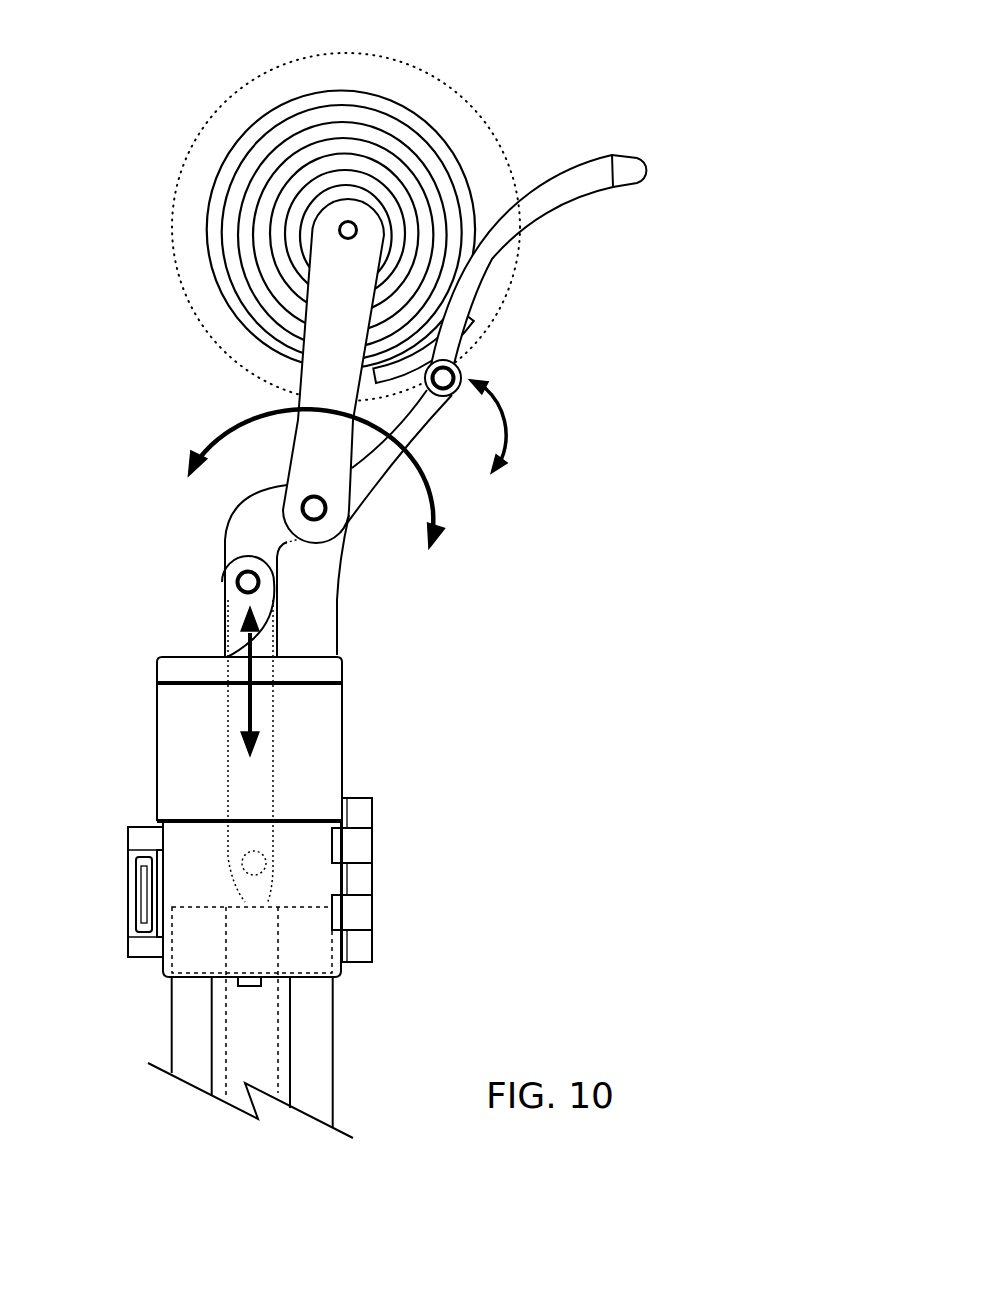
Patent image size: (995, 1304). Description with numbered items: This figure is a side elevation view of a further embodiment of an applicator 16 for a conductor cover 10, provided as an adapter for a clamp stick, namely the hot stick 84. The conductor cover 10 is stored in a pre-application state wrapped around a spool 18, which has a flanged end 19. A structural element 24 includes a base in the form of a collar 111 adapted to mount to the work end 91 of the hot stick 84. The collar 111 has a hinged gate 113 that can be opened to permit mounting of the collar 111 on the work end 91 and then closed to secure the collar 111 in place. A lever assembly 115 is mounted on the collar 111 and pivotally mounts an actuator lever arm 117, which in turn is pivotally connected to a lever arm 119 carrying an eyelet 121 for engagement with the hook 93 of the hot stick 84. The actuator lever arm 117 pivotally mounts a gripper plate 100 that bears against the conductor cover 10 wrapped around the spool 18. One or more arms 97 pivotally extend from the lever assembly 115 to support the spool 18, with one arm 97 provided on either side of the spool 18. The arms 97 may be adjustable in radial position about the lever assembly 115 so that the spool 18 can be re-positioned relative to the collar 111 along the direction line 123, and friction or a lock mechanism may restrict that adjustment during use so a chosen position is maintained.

The conductor cover 10 is at (400, 102).
The applicator 16 is at (542, 95).
The spool 18 is at (149, 217).
The flanged end 19 is at (503, 145).
The structural element 24 is at (320, 633).
The hot stick 84 is at (333, 1018).
The work end 91 is at (203, 907).
The hook 93 is at (267, 898).
The arm 97 is at (305, 377).
The gripper plate 100 is at (460, 343).
The collar 111 is at (347, 700).
The hinged gate 113 is at (318, 880).
The lever assembly 115 is at (323, 578).
The actuator lever arm 117 is at (432, 428).
The lever arm 119 is at (278, 736).
The eyelet 121 is at (252, 858).
The direction line 123 is at (228, 437).